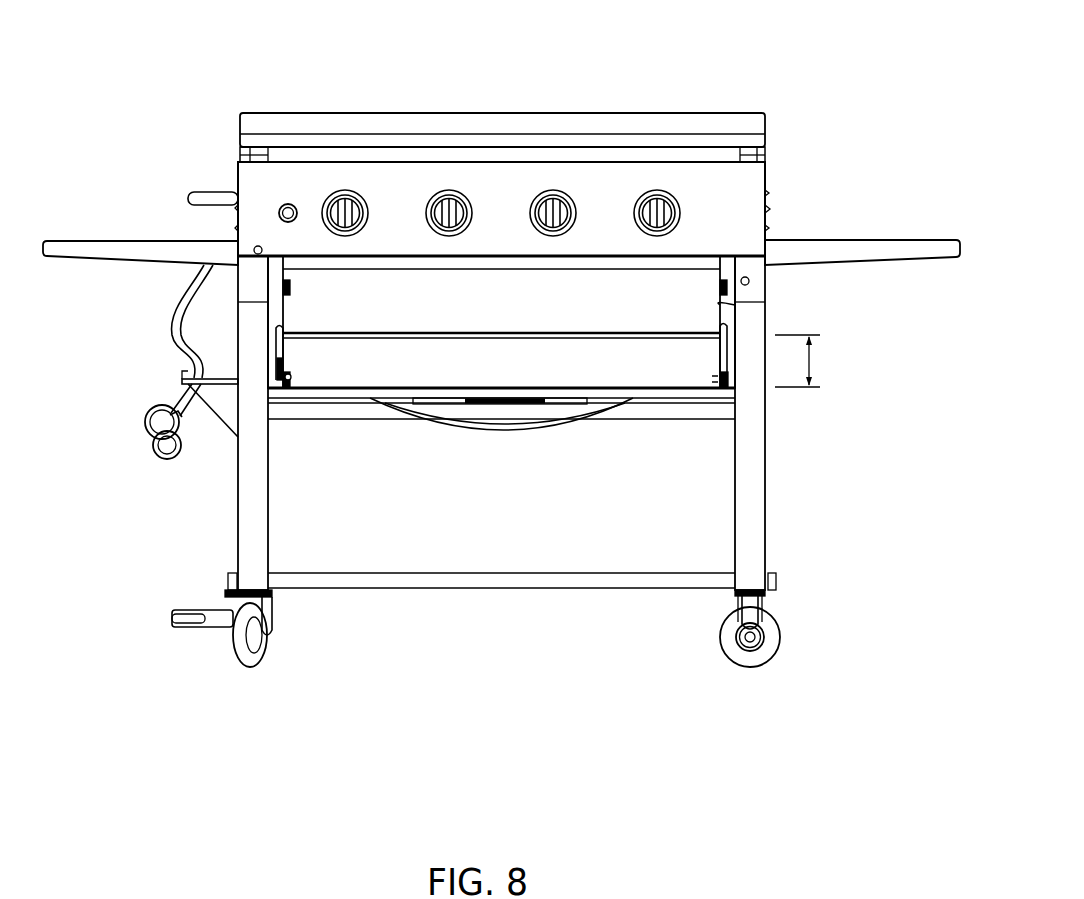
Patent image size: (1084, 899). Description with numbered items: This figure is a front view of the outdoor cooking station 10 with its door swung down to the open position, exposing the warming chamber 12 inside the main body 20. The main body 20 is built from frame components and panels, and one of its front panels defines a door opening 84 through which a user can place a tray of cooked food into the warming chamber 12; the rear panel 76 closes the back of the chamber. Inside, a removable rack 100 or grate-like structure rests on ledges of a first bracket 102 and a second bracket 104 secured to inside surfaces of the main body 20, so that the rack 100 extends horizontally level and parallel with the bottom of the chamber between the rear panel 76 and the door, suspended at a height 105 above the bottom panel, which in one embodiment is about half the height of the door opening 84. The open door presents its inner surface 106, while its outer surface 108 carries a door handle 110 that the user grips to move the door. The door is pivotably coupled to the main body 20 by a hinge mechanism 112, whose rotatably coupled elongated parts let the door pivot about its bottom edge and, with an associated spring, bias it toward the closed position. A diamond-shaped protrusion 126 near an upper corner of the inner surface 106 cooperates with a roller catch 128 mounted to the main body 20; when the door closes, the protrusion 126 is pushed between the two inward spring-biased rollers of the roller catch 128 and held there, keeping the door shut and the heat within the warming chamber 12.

The outdoor cooking station 10 is at (845, 59).
The main body 20 is at (780, 208).
The warming chamber 12 is at (464, 312).
The rear panel 76 is at (530, 293).
The door opening 84 is at (735, 306).
The removable rack 100 is at (579, 324).
The first bracket 102 is at (284, 332).
The second bracket 104 is at (716, 335).
The height 105 is at (809, 361).
The inner surface 106 is at (360, 388).
The outer surface 108 is at (348, 398).
The door handle 110 is at (505, 431).
The hinge mechanism 112 is at (700, 380).
The protrusion 126 is at (300, 388).
The roller catch 128 is at (302, 287).